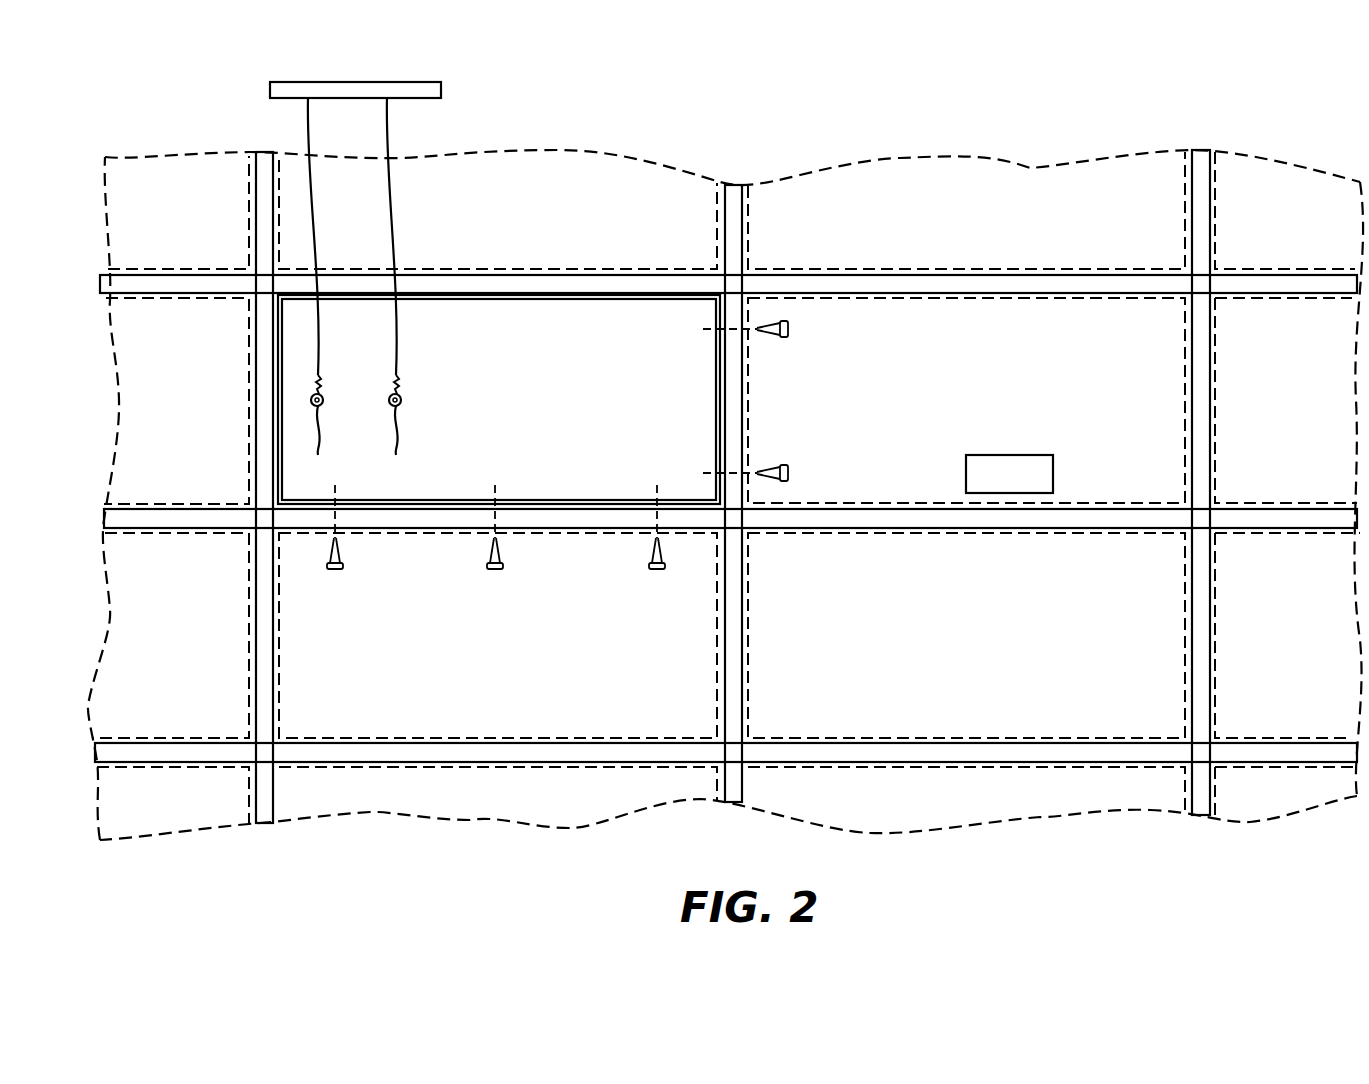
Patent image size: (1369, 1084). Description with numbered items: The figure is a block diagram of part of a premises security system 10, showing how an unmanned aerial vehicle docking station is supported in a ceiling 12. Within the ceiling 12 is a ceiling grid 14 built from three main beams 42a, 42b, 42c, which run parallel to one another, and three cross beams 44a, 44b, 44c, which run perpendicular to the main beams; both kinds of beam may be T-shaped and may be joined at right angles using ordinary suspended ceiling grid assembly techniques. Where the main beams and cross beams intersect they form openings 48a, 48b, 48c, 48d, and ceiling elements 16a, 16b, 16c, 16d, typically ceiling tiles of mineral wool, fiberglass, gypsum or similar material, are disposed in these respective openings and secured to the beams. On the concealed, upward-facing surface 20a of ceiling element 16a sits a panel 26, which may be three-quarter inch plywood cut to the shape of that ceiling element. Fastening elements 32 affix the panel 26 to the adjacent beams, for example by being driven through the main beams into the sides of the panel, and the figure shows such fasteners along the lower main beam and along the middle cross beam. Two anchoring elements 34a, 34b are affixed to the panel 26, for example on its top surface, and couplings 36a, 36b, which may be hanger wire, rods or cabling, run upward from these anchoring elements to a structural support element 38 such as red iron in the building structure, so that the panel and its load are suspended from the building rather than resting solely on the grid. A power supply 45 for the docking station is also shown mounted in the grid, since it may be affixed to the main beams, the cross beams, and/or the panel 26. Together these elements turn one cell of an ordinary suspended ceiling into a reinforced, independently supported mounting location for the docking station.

The premises security system 10 is at (1203, 118).
The ceiling 12 is at (897, 158).
The ceiling grid 14 is at (1050, 274).
The ceiling element 16a is at (474, 295).
The ceiling element 16b is at (870, 297).
The ceiling element 16c is at (437, 743).
The ceiling element 16d is at (958, 743).
The concealed surface 20a is at (300, 348).
The panel 26 is at (513, 412).
The fastening elements 32 is at (650, 570).
The anchoring element 34a is at (308, 427).
The anchoring element 34b is at (389, 427).
The coupling 36a is at (308, 130).
The coupling 36b is at (390, 132).
The structural support element 38 is at (270, 90).
The main beam 42a is at (100, 284).
The main beam 42b is at (104, 522).
The main beam 42c is at (95, 755).
The cross beam 44a is at (263, 686).
The cross beam 44b is at (733, 686).
The cross beam 44c is at (1200, 686).
The power supply 45 is at (1024, 485).
The opening 48a is at (558, 293).
The opening 48b is at (955, 293).
The opening 48c is at (521, 743).
The opening 48d is at (1045, 743).